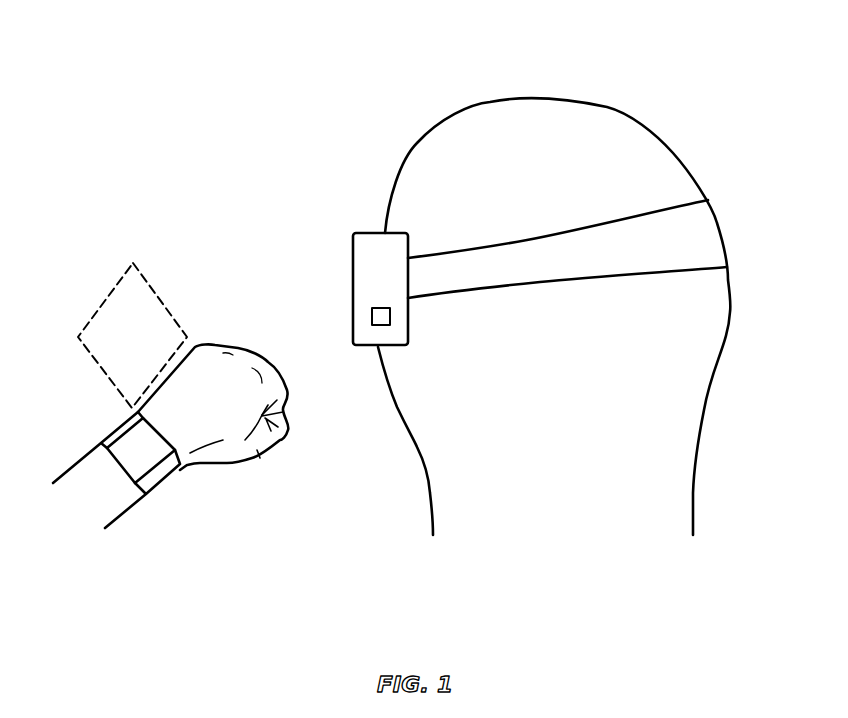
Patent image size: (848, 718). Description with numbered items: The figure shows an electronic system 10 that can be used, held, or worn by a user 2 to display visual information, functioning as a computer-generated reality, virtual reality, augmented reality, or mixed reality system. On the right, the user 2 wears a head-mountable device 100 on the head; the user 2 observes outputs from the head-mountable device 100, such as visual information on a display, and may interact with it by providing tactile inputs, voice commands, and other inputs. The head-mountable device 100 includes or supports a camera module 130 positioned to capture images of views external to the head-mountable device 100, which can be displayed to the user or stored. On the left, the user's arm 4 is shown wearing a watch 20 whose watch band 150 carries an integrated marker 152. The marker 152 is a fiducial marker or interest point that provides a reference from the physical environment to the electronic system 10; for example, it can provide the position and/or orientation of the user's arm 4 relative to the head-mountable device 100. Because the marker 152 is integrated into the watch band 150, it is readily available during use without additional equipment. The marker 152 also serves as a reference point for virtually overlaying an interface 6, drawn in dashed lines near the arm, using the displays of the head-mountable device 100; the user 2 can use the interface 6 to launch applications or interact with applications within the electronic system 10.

The electronic system 10 is at (745, 25).
The user 2 is at (628, 130).
The head-mountable device 100 is at (496, 303).
The camera module 130 is at (378, 323).
The interface 6 is at (102, 316).
The user's arm 4 is at (74, 463).
The watch band 150 is at (139, 501).
The watch 20 is at (130, 465).
The marker 152 is at (115, 423).